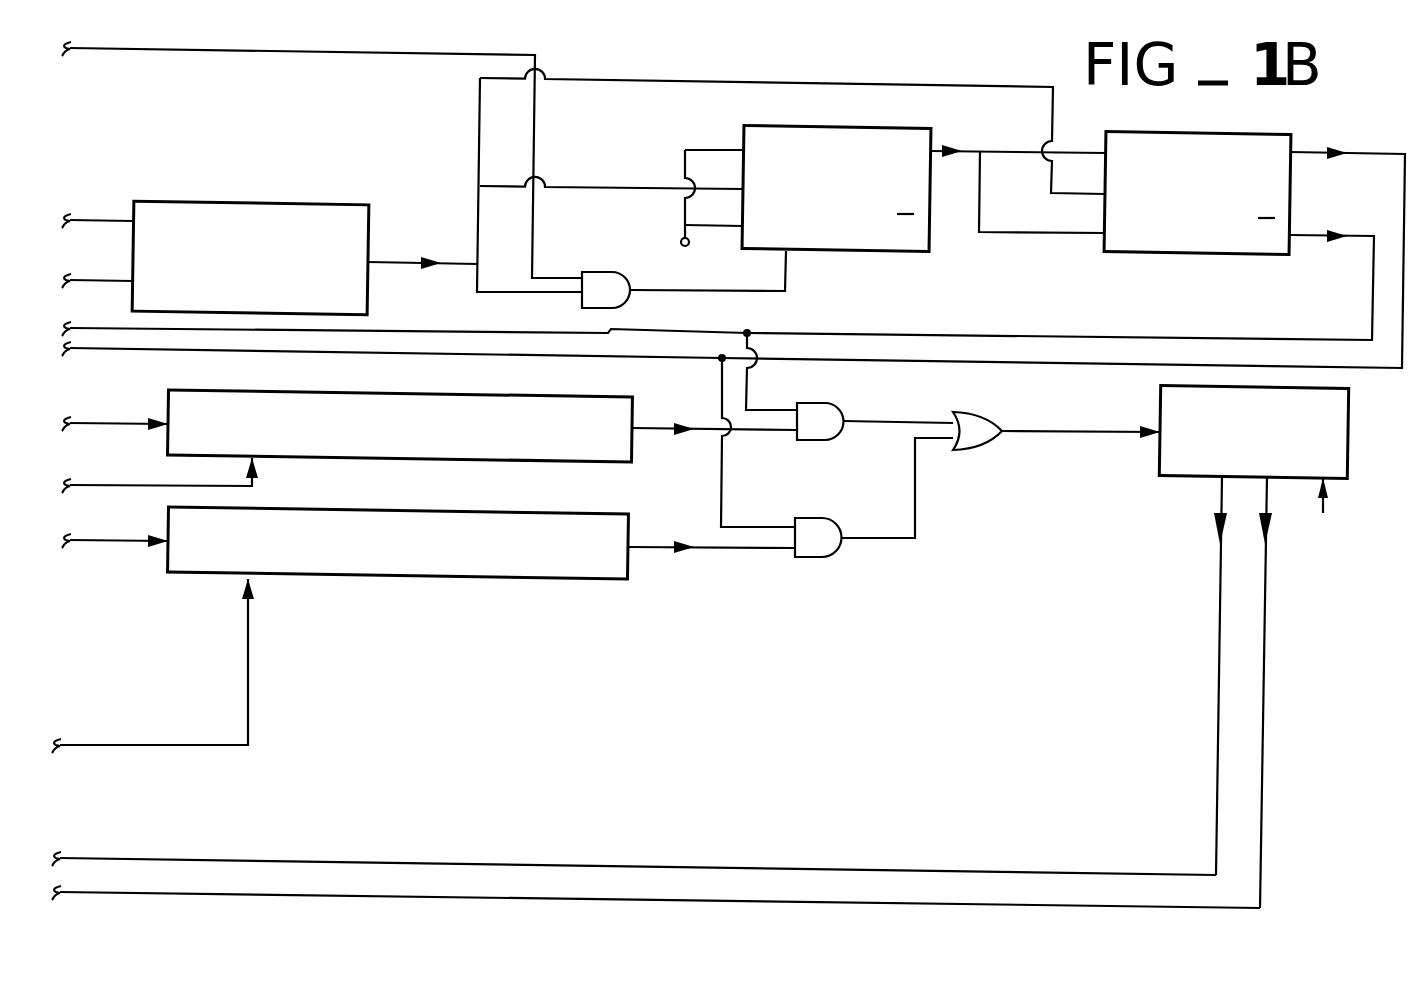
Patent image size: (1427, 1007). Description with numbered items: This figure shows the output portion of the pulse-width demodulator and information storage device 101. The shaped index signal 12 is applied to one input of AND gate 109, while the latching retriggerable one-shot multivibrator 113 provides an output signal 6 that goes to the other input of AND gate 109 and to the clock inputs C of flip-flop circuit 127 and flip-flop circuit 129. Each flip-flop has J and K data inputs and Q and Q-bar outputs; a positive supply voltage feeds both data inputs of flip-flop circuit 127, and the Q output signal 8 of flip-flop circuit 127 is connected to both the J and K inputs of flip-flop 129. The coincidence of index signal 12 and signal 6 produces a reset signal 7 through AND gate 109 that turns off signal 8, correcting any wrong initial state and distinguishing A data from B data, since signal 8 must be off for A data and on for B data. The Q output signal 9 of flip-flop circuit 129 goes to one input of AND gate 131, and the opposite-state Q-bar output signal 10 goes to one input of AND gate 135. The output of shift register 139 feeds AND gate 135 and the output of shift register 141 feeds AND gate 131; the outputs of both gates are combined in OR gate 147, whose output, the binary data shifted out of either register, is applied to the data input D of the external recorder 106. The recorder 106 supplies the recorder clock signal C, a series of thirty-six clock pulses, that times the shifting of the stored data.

The pulse-width demodulator and information storage device 101 is at (921, 686).
The external recorder 106 is at (1180, 478).
The AND gate 109 is at (630, 302).
The latching retriggerable one-shot multivibrator 113 is at (233, 203).
The flip-flop circuit 127 is at (835, 127).
The flip-flop circuit 129 is at (1182, 132).
The AND gate 131 is at (824, 519).
The AND gate 135 is at (832, 404).
The shift register 139 is at (585, 463).
The shift register 141 is at (590, 580).
The OR gate 147 is at (985, 449).
The index signal 12 is at (390, 54).
The output signal 6 is at (568, 296).
The reset signal 7 is at (790, 276).
The Q output signal 8 is at (1024, 153).
The Q output signal 9 is at (1374, 152).
The Q-bar output signal 10 is at (1373, 268).
The recorder clock signal C is at (492, 867).